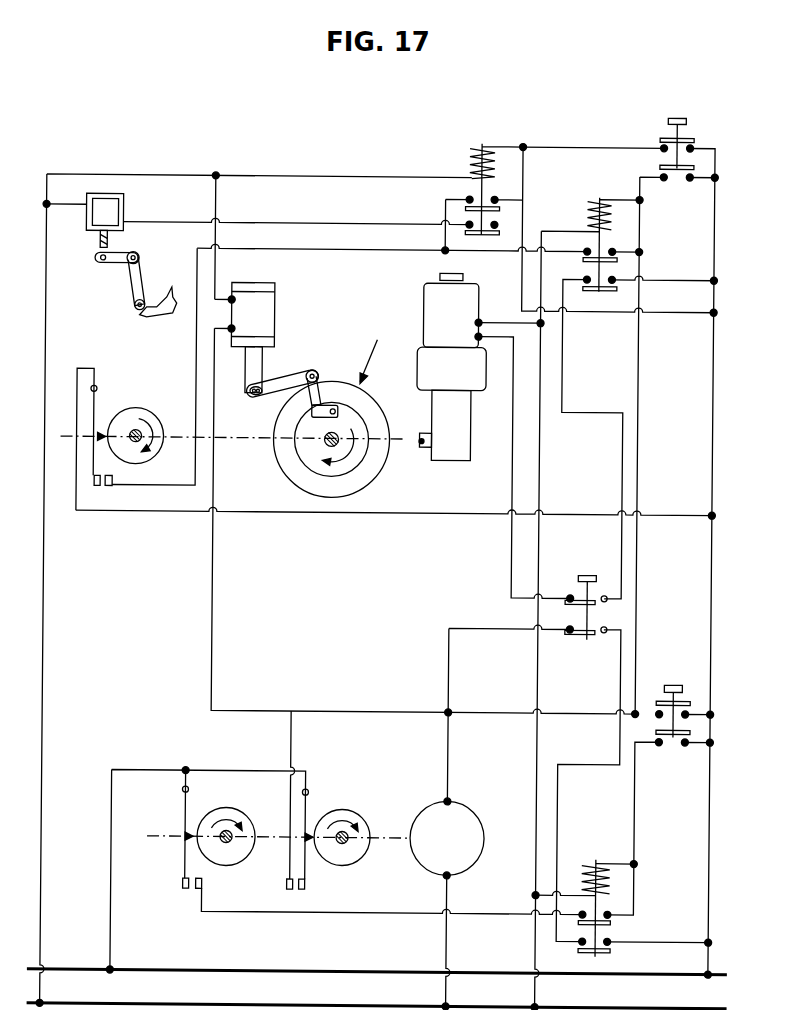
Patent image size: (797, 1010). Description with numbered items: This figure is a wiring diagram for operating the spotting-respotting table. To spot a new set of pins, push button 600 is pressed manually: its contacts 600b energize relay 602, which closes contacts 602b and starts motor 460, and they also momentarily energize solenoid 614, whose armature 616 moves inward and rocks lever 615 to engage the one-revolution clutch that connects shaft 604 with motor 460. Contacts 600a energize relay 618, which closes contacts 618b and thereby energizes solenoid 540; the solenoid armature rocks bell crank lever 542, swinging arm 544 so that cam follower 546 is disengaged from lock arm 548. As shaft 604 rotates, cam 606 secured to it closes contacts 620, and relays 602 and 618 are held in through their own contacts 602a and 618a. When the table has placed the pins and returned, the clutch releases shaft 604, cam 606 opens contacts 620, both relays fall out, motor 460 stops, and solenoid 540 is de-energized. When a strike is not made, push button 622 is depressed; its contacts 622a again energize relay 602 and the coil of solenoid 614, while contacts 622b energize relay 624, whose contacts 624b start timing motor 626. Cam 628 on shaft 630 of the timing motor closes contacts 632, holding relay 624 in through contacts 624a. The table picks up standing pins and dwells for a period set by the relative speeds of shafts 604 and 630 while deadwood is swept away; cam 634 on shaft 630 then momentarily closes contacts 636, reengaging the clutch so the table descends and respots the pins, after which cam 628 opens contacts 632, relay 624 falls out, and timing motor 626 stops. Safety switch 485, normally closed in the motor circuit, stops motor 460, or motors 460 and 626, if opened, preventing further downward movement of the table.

The solenoid 540 is at (103, 214).
The bell crank lever 542 is at (113, 261).
The arm 544 is at (133, 288).
The cam follower 546 is at (136, 309).
The lock arm 548 is at (155, 315).
The relay 618 is at (470, 160).
The contacts 618a is at (465, 198).
The contacts 618b is at (494, 224).
The push button 600 is at (677, 116).
The contacts 600a is at (661, 144).
The contacts 600b is at (661, 172).
The relay 602 is at (585, 222).
The contacts 602a is at (611, 250).
The contacts 602b is at (611, 278).
The motor 460 is at (441, 310).
The solenoid 614 is at (258, 321).
The armature 616 is at (254, 369).
The lever 615 is at (287, 384).
The shaft 604 is at (172, 430).
The cam 606 is at (133, 415).
The contacts 620 is at (117, 485).
The safety switch 485 is at (587, 575).
The push button 622 is at (688, 663).
The contacts 622a is at (689, 710).
The contacts 622b is at (685, 746).
The relay 624 is at (586, 863).
The contacts 624a is at (611, 913).
The contacts 624b is at (611, 940).
The shaft 630 is at (171, 839).
The cam 628 is at (240, 831).
The contacts 632 is at (205, 885).
The cam 634 is at (355, 823).
The contacts 636 is at (308, 886).
The timing motor 626 is at (466, 812).